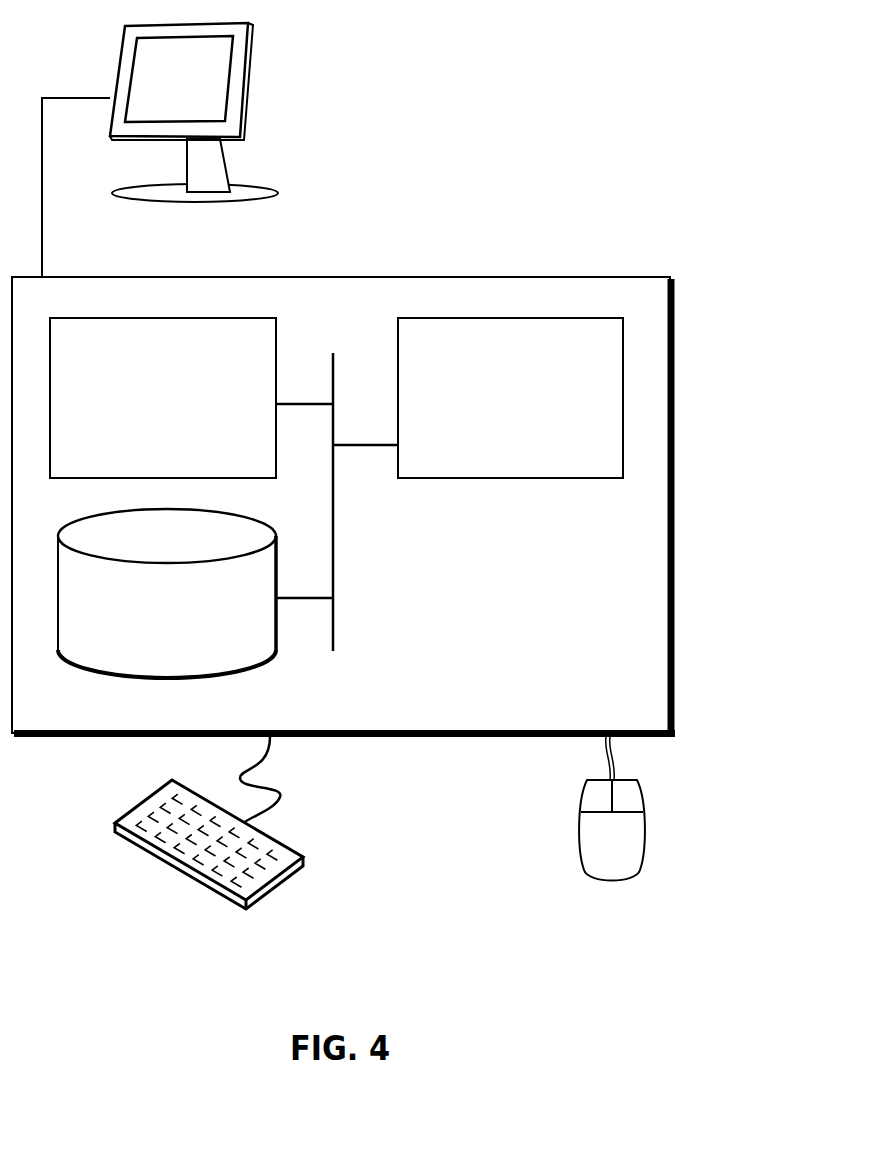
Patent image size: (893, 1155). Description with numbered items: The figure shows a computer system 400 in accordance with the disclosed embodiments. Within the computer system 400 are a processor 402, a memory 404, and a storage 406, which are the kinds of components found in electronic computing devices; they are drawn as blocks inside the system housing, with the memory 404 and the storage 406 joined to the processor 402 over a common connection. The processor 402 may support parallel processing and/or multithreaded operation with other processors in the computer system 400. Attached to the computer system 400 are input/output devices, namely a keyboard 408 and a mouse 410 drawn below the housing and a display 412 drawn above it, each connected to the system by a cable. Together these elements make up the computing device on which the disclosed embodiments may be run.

The computer system 400 is at (387, 256).
The processor 402 is at (535, 414).
The memory 404 is at (186, 411).
The storage 406 is at (192, 622).
The keyboard 408 is at (133, 843).
The mouse 410 is at (632, 852).
The display 412 is at (160, 150).